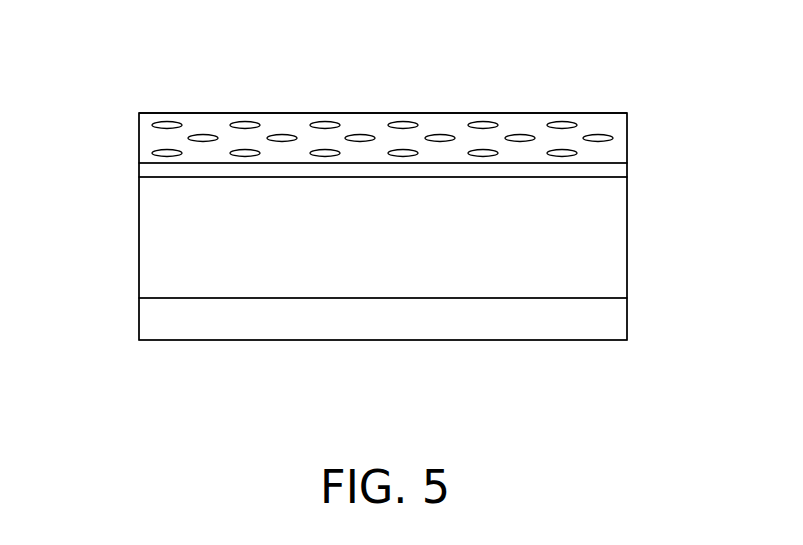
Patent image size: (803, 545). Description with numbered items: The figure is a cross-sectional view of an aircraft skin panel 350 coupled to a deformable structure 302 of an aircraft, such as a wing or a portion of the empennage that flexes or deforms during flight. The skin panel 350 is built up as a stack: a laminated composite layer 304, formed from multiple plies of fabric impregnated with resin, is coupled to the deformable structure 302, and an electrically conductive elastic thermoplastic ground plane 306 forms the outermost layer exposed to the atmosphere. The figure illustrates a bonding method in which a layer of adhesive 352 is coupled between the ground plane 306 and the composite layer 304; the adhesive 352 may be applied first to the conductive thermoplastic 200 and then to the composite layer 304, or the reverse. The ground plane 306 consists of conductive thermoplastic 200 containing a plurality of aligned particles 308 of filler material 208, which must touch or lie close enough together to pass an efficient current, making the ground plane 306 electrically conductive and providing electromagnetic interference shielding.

The conductive thermoplastic 200 is at (618, 125).
The filler material 208 is at (439, 120).
The aligned particles 308 is at (283, 134).
The thermoplastic ground plane 306 is at (543, 97).
The adhesive 352 is at (618, 170).
The laminated composite layer 304 is at (419, 252).
The deformable structure 302 is at (617, 320).
The aircraft skin panel 350 is at (117, 113).